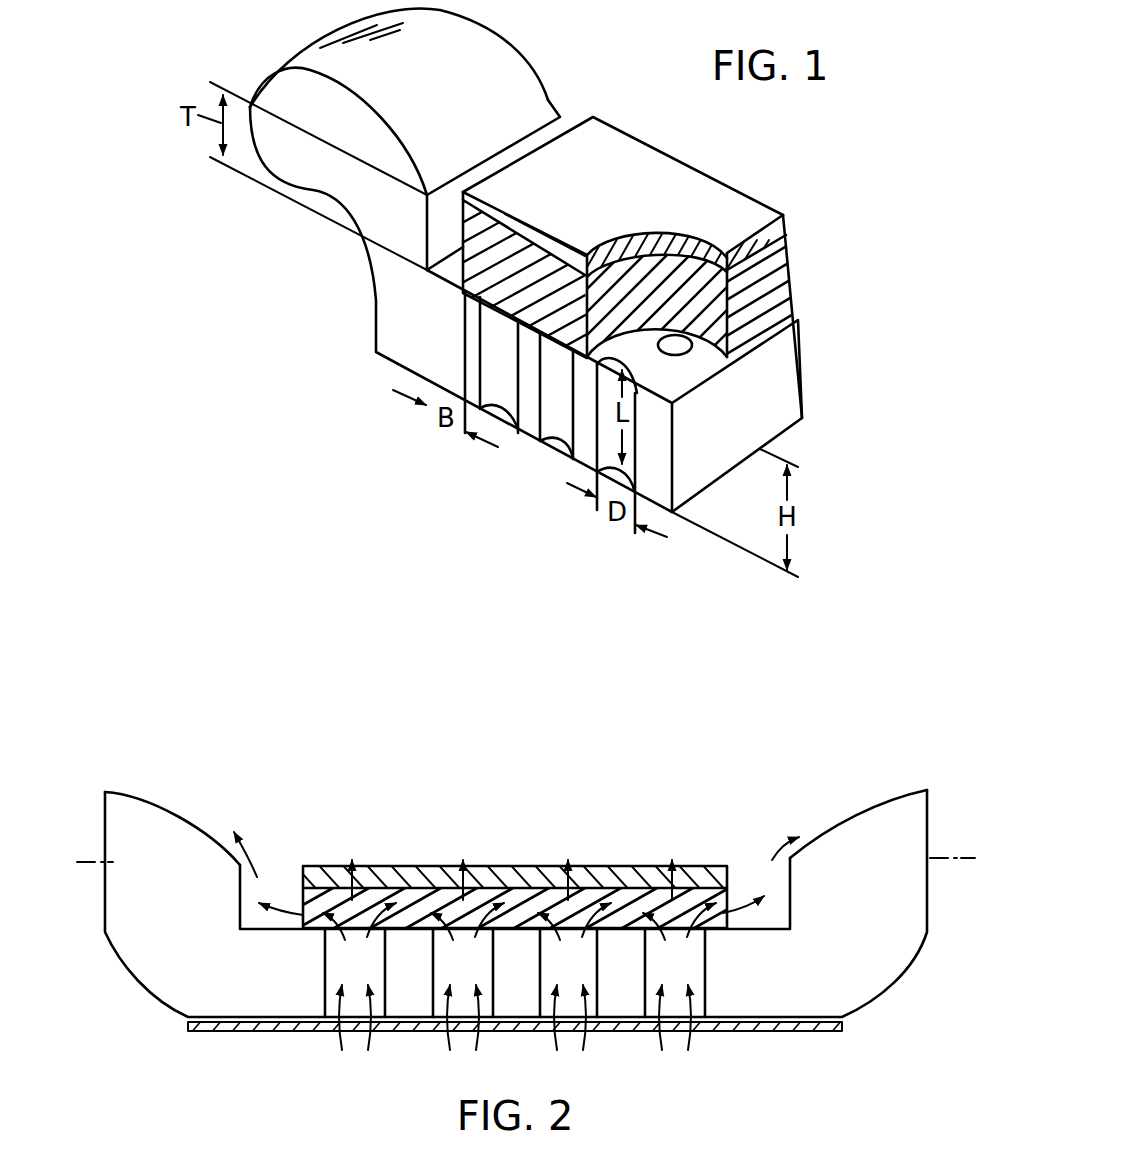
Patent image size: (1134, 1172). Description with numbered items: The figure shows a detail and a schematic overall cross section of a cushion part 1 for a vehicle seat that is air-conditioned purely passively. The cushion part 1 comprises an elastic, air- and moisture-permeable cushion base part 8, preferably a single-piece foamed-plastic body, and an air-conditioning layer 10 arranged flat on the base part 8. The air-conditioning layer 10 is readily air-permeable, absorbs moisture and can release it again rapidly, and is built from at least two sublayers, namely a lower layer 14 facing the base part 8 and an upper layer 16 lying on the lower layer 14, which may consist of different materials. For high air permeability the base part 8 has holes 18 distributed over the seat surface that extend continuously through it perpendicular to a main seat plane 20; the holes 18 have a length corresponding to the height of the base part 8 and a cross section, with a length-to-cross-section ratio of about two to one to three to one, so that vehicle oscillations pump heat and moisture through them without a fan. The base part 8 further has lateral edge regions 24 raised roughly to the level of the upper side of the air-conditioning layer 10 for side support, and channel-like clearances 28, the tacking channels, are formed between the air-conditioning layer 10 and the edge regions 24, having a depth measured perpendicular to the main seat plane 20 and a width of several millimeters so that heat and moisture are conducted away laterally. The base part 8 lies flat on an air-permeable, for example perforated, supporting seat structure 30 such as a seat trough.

In FIG. 1, the cushion part 1 is at (358, 335).
In FIG. 2, the cushion part 1 is at (893, 988).
In FIG. 1, the cushion base part 8 is at (780, 380).
In FIG. 2, the cushion base part 8 is at (203, 975).
In FIG. 1, the air-conditioning layer 10 is at (790, 213).
In FIG. 2, the air-conditioning layer 10 is at (297, 886).
In FIG. 1, the lower layer 14 is at (763, 267).
In FIG. 2, the lower layer 14 is at (717, 897).
In FIG. 1, the upper layer 16 is at (680, 187).
In FIG. 2, the upper layer 16 is at (708, 866).
In FIG. 1, the holes 18 is at (682, 347).
In FIG. 2, the holes 18 is at (337, 965).
In FIG. 2, the main seat plane 20 is at (87, 862).
In FIG. 1, the lateral edge regions 24 is at (500, 57).
In FIG. 2, the lateral edge regions 24 is at (170, 833).
In FIG. 1, the channel-like clearances 28 is at (449, 212).
In FIG. 2, the channel-like clearances 28 is at (275, 886).
In FIG. 2, the supporting seat structure 30 is at (767, 1031).